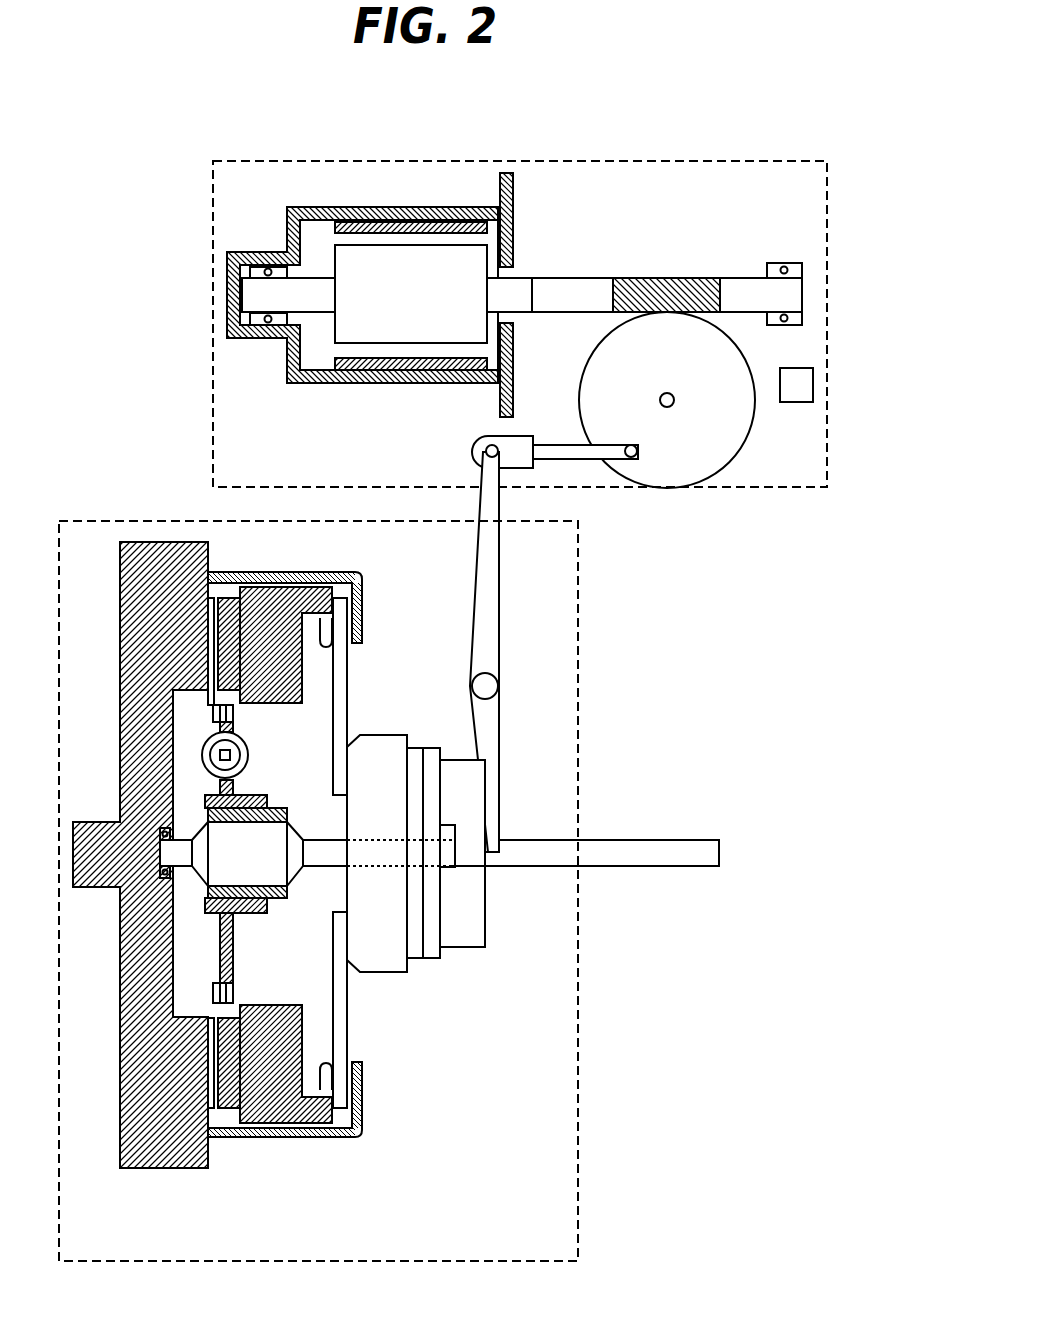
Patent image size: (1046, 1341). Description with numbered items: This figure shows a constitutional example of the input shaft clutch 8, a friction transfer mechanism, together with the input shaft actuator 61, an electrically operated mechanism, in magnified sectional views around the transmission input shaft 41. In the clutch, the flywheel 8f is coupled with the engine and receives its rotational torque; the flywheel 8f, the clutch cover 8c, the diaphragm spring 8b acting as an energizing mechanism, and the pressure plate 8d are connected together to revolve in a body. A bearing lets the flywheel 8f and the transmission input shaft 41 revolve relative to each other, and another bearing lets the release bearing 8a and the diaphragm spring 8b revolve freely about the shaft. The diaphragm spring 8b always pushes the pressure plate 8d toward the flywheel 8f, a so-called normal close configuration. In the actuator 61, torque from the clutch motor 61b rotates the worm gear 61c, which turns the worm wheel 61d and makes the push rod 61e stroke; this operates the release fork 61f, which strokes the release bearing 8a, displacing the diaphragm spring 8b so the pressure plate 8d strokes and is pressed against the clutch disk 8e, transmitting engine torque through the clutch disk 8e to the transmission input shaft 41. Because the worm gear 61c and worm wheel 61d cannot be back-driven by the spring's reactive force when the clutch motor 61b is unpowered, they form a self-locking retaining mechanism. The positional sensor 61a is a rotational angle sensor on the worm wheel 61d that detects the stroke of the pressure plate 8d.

The input shaft clutch actuator 61 is at (735, 160).
The positional sensor 61a is at (813, 383).
The clutch motor 61b is at (345, 207).
The worm gear 61c is at (640, 278).
The worm wheel 61d is at (723, 440).
The push rod 61e is at (577, 459).
The release fork 61f is at (500, 518).
The input shaft clutch 8 is at (578, 1105).
The release bearing 8a is at (463, 947).
The diaphragm spring 8b is at (349, 1012).
The clutch cover 8c is at (323, 1138).
The pressure plate 8d is at (258, 1107).
The clutch disk 8e is at (208, 597).
The flywheel 8f is at (118, 1000).
The transmission input shaft 41 is at (272, 830).